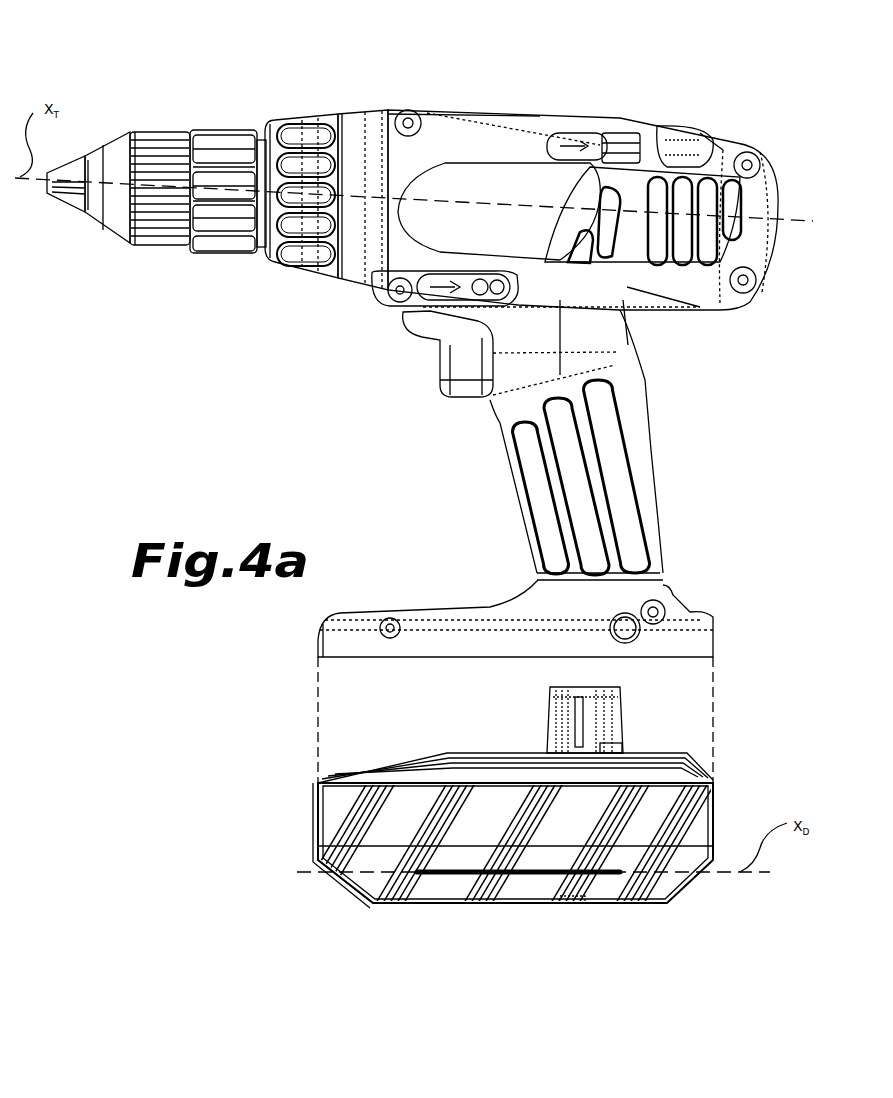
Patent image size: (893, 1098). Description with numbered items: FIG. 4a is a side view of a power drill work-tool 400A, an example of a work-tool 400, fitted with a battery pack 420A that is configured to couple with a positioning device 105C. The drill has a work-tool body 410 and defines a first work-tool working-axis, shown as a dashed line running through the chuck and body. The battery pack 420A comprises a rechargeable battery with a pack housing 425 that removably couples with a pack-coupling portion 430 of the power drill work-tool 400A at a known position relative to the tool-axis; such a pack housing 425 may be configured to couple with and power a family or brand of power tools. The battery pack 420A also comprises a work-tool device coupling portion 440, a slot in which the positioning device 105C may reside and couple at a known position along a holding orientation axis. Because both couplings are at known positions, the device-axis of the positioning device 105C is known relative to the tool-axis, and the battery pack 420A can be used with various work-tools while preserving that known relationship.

The work-tool 400 is at (572, 82).
The power drill work-tool 400A is at (648, 97).
The work-tool body 410 is at (340, 287).
The battery pack 420A is at (317, 828).
The pack housing 425 is at (353, 900).
The pack-coupling portion 430 is at (483, 657).
The work-tool device coupling portion 440 is at (523, 877).
The positioning device 105C is at (570, 903).